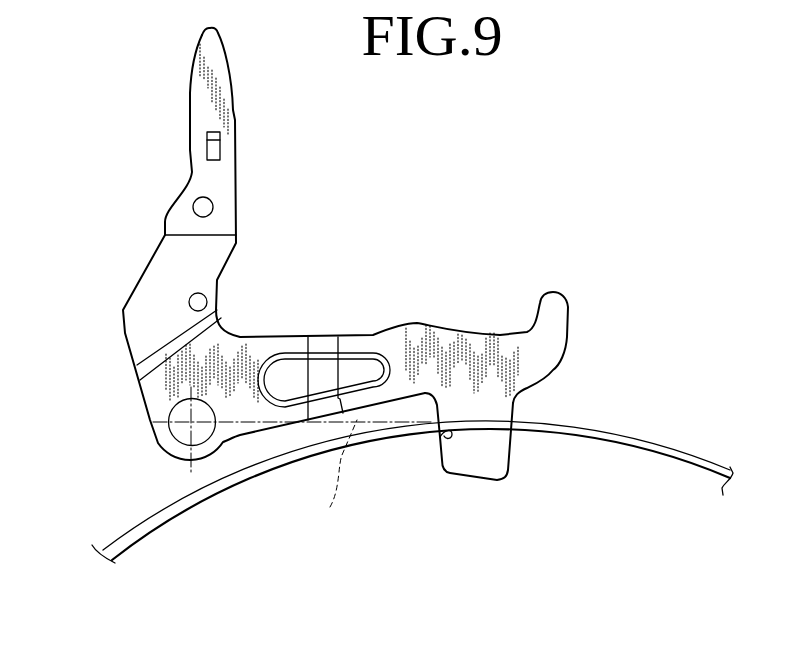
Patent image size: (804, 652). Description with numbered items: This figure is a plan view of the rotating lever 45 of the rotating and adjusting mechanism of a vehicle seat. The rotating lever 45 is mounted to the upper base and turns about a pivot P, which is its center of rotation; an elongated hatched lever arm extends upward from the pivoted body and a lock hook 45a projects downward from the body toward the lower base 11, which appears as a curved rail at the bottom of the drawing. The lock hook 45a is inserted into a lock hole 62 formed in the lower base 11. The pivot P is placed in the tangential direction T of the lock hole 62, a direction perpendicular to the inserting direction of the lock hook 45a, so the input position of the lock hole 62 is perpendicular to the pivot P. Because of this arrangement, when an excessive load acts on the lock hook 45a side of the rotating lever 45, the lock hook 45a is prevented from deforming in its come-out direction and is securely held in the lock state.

The rotating lever 45 is at (240, 208).
The lock hook 45a is at (508, 462).
The lower base 11 is at (663, 447).
The lock hole 62 is at (444, 436).
The pivot P is at (155, 450).
The tangential direction T is at (328, 476).